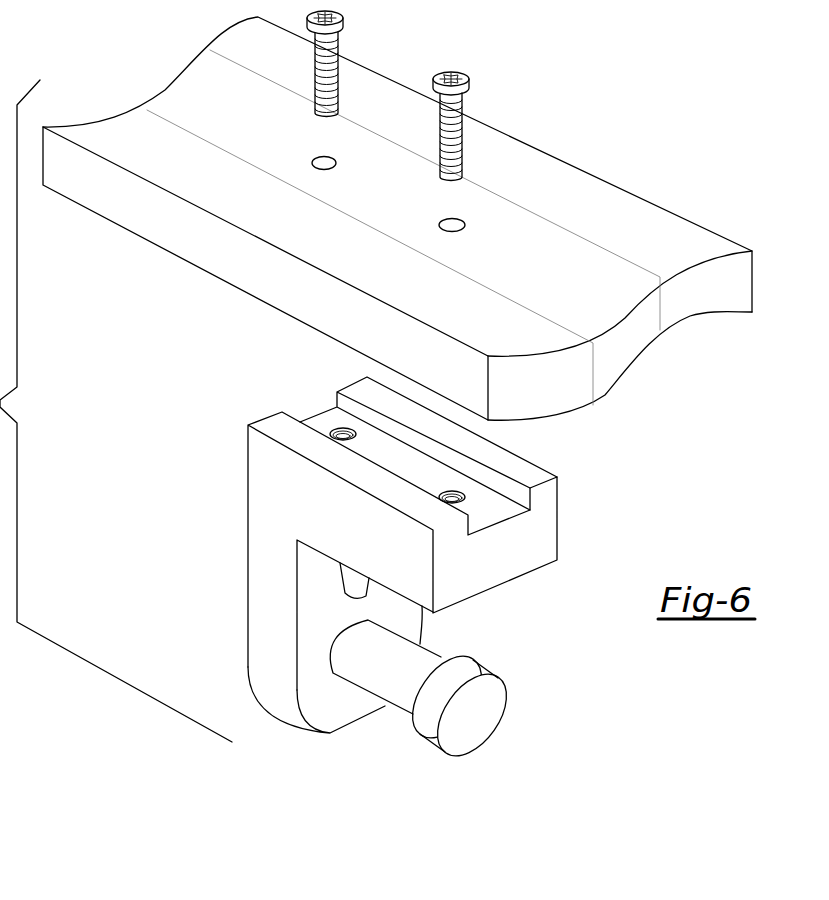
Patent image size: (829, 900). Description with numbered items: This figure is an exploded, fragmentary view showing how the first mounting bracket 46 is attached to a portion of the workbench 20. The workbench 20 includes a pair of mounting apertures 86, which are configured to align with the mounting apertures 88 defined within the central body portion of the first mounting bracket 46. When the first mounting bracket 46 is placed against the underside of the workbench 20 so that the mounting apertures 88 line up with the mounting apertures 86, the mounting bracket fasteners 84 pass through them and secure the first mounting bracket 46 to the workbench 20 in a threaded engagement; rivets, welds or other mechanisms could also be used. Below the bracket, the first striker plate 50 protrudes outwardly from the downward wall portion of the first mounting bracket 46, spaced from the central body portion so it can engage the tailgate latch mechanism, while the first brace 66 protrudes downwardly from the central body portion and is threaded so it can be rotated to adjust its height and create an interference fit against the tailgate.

The workbench 20 is at (213, 258).
The mounting bracket fasteners 84 is at (450, 118).
The mounting apertures 86 is at (452, 223).
The mounting apertures 88 is at (447, 491).
The first mounting bracket 46 is at (270, 590).
The first brace 66 is at (352, 590).
The first striker plate 50 is at (465, 667).